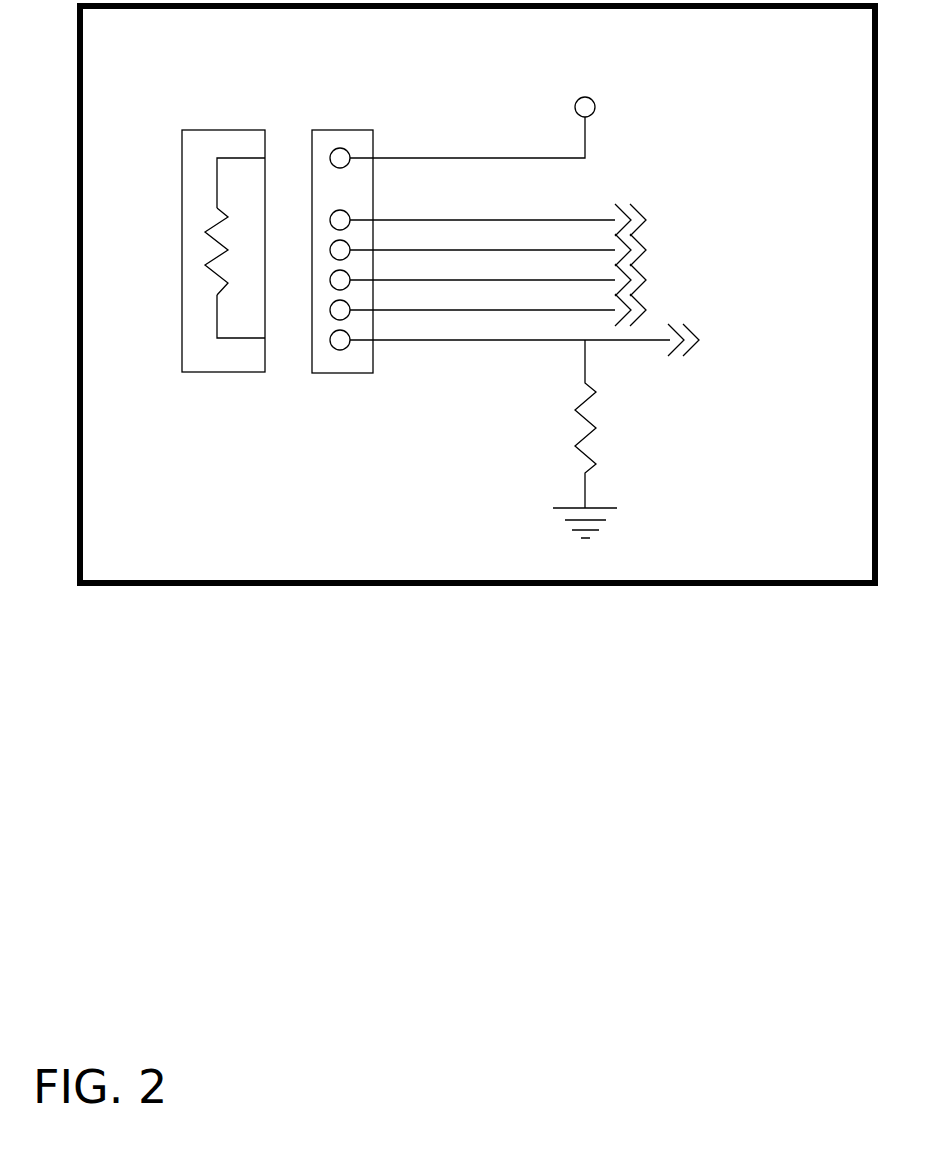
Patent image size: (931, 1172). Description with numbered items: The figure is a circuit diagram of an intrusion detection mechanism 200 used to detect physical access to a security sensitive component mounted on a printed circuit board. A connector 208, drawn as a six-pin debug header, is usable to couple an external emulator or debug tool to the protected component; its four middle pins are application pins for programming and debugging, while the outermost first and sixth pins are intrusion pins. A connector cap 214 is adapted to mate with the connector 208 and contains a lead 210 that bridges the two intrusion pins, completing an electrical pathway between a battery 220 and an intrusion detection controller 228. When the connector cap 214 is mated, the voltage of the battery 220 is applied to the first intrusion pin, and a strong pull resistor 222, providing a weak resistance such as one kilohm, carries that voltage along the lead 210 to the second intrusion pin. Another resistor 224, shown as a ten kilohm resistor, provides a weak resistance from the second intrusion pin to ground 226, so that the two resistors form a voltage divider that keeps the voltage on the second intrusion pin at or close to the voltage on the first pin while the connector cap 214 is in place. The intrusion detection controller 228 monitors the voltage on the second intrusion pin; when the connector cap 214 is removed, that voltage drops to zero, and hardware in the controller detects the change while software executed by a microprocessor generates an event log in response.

The intrusion detection mechanism 200 is at (806, 61).
The connector 208 is at (338, 128).
The lead 210 is at (264, 338).
The connector cap 214 is at (200, 128).
The battery 220 is at (603, 82).
The strong pull resistor 222 is at (210, 263).
The resistor 224 is at (597, 433).
The ground 226 is at (612, 508).
The intrusion detection controller 228 is at (755, 372).